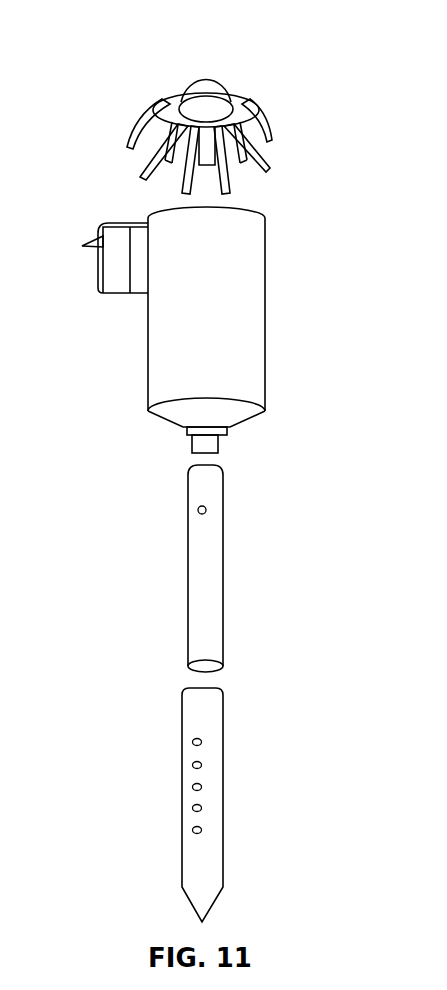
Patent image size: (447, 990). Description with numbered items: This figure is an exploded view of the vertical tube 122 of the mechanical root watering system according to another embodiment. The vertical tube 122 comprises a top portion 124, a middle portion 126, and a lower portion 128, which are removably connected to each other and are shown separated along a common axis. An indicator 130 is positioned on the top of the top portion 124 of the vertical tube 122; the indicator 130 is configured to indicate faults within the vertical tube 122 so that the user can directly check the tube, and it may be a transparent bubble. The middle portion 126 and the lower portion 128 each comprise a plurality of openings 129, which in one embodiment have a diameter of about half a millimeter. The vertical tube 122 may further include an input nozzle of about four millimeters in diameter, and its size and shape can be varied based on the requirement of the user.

The vertical tube 122 is at (138, 64).
The indicator 130 is at (270, 157).
The top portion 124 is at (250, 315).
The middle portion 126 is at (210, 552).
The lower portion 128 is at (210, 793).
The plurality of openings 129 is at (197, 508).